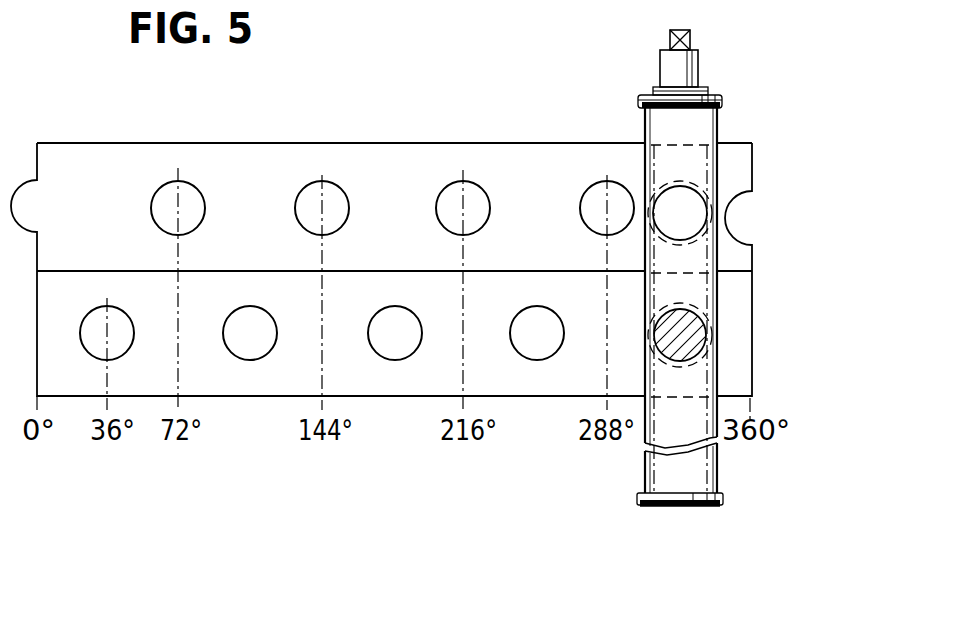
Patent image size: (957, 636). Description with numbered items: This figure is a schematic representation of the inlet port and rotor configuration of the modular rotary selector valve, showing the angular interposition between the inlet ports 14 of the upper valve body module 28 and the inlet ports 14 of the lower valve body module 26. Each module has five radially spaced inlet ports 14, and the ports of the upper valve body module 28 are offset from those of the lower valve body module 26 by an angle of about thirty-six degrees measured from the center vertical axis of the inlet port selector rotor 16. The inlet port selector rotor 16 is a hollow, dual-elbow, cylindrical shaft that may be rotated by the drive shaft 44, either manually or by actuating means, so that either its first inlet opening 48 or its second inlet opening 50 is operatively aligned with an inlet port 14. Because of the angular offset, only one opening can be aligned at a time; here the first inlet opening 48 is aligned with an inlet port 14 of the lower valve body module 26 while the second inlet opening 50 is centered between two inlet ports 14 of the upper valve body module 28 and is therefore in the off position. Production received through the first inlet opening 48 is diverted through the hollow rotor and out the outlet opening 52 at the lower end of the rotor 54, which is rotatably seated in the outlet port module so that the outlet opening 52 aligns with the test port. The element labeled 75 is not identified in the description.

The inlet ports 14 is at (323, 206).
The inlet port selector rotor 16 is at (645, 443).
The lower valve body module 26 is at (752, 362).
The upper valve body module 28 is at (752, 248).
The drive shaft 44 is at (698, 65).
The first inlet opening 48 is at (695, 333).
The second inlet opening 50 is at (687, 220).
The outlet opening 52 is at (681, 508).
The lower end of the rotor 54 is at (660, 502).
The top flange 75 is at (640, 98).